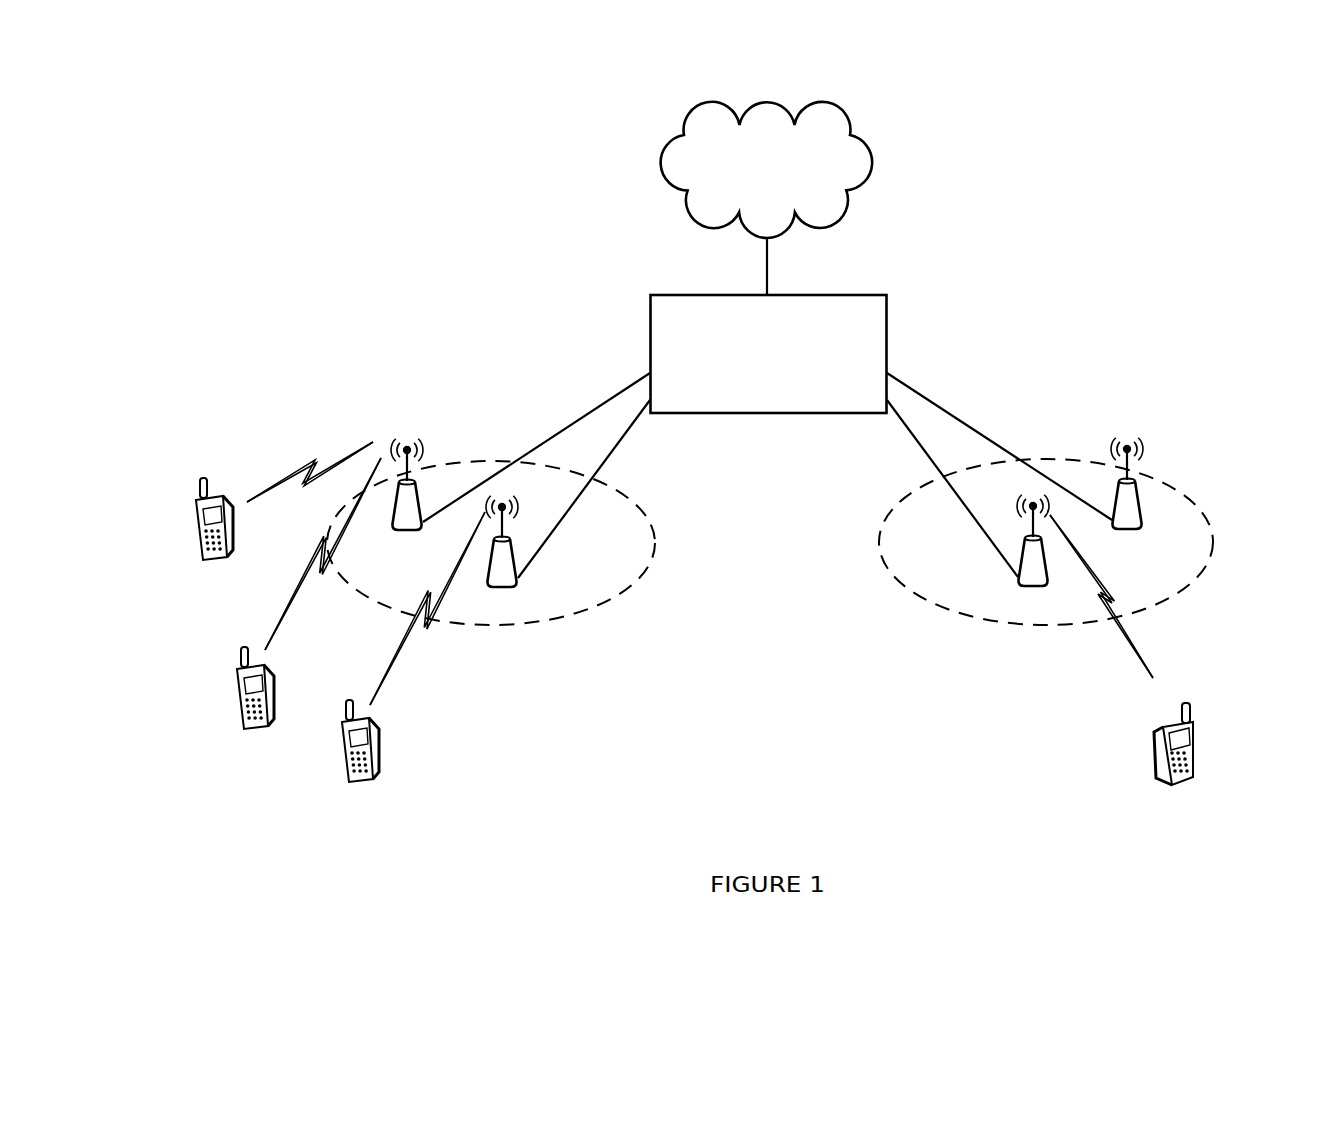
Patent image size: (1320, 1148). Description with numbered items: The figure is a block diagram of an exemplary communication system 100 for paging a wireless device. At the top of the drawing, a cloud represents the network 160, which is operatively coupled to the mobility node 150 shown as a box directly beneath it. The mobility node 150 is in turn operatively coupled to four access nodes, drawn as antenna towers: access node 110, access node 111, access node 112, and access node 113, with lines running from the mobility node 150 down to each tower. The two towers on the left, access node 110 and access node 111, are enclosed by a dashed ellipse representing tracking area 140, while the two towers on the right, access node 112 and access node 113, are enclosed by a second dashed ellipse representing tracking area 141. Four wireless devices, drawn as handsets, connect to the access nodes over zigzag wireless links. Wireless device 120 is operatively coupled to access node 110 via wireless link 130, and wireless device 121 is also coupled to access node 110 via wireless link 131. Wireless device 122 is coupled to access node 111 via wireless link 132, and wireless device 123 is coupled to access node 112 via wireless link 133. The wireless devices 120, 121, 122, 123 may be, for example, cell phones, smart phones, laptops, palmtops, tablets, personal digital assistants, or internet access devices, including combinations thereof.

The communication system 100 is at (222, 108).
The access node 110 is at (416, 532).
The access node 111 is at (513, 590).
The access node 112 is at (1022, 589).
The access node 113 is at (1118, 532).
The wireless device 120 is at (218, 560).
The wireless device 121 is at (258, 728).
The wireless device 122 is at (352, 780).
The wireless device 123 is at (1190, 777).
The wireless link 130 is at (308, 462).
The wireless link 131 is at (280, 622).
The wireless link 132 is at (397, 662).
The wireless link 133 is at (1133, 644).
The tracking area 140 is at (603, 580).
The tracking area 141 is at (978, 578).
The mobility node 150 is at (788, 396).
The network 160 is at (788, 190).